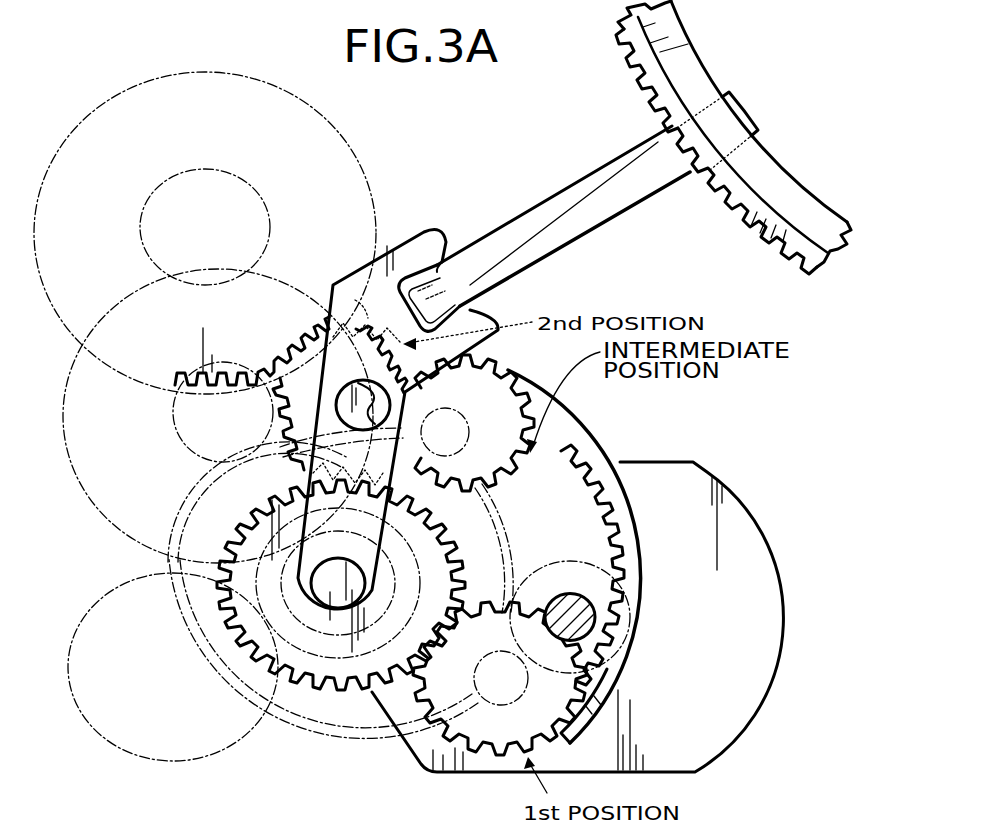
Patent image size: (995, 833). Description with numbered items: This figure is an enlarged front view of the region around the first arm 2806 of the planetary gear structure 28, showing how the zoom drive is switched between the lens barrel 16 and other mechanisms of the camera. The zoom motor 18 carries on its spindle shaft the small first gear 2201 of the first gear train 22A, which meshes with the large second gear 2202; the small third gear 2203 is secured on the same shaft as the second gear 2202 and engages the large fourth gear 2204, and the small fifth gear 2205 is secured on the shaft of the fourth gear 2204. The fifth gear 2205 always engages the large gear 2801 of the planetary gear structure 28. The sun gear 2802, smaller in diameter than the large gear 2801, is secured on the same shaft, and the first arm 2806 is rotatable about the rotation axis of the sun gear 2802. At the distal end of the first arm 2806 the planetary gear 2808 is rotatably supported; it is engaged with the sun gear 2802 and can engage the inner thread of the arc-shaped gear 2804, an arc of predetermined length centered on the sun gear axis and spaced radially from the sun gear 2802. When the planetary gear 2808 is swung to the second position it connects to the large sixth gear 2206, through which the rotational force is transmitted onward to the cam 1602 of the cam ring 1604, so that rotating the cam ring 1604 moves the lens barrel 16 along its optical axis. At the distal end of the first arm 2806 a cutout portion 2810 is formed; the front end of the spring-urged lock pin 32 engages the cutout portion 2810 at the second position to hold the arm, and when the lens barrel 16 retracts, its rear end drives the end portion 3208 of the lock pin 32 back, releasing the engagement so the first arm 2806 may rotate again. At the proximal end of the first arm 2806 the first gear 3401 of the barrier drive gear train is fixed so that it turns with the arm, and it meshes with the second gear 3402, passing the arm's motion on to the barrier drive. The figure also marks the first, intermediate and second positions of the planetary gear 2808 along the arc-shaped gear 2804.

The lens barrel 16 is at (695, 67).
The cam 1602 is at (753, 233).
The cam ring 1604 is at (748, 200).
The zoom motor 18 is at (770, 611).
The first gear train 22A is at (618, 433).
The first gear 2201 is at (578, 558).
The second gear 2202 is at (528, 516).
The third gear 2203 is at (232, 527).
The fourth gear 2204 is at (105, 512).
The fifth gear 2205 is at (183, 445).
The sixth gear 2206 is at (268, 363).
The planetary gear structure 28 is at (413, 227).
The large gear 2801 is at (357, 727).
The sun gear 2802 is at (212, 561).
The arc-shaped gear 2804 is at (637, 553).
The first arm 2806 is at (365, 312).
The planetary gear 2808 is at (276, 401).
The cutout portion 2810 is at (441, 258).
The lock pin 32 is at (468, 296).
The end portion 3208 is at (557, 200).
The first gear 3401 is at (171, 618).
The second gear 3402 is at (233, 743).